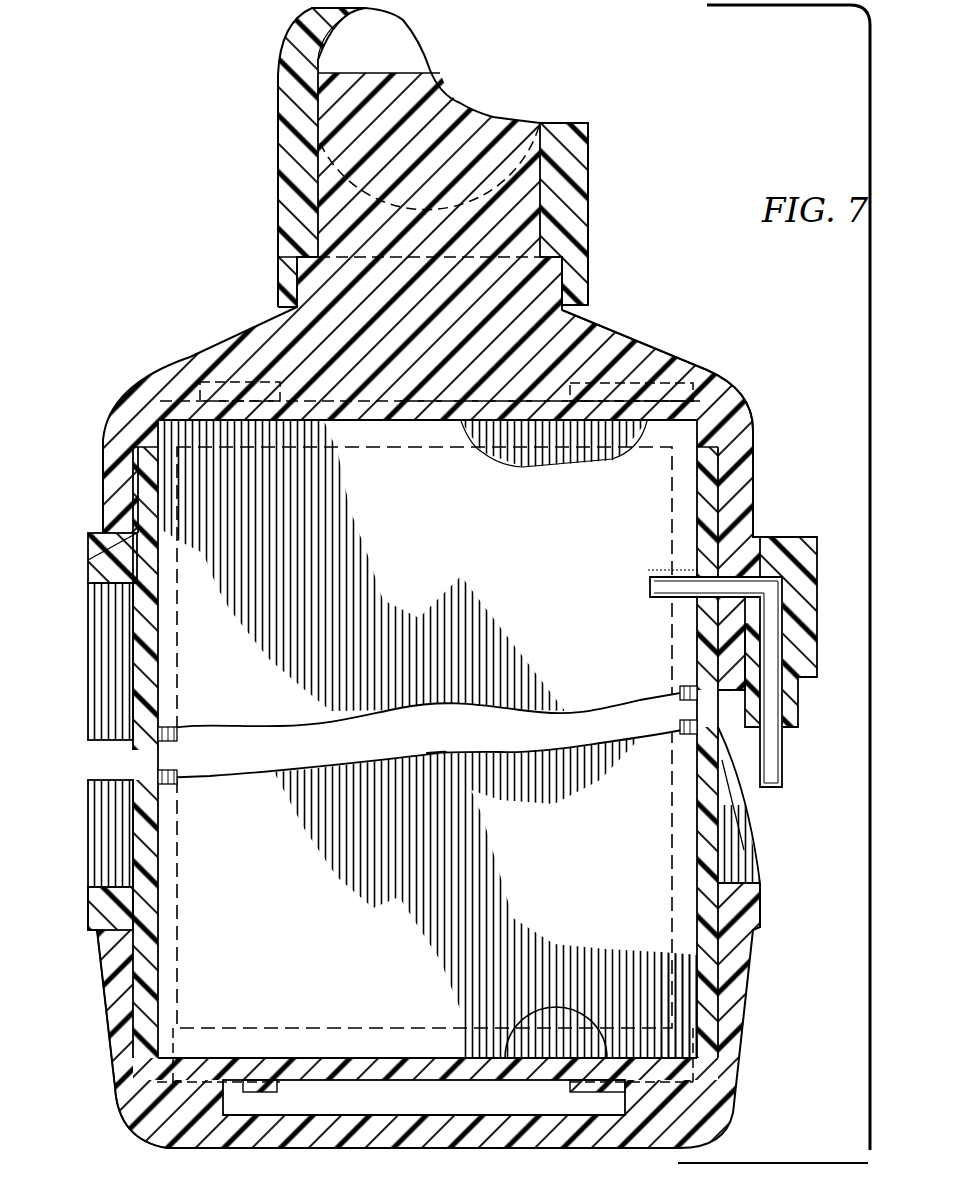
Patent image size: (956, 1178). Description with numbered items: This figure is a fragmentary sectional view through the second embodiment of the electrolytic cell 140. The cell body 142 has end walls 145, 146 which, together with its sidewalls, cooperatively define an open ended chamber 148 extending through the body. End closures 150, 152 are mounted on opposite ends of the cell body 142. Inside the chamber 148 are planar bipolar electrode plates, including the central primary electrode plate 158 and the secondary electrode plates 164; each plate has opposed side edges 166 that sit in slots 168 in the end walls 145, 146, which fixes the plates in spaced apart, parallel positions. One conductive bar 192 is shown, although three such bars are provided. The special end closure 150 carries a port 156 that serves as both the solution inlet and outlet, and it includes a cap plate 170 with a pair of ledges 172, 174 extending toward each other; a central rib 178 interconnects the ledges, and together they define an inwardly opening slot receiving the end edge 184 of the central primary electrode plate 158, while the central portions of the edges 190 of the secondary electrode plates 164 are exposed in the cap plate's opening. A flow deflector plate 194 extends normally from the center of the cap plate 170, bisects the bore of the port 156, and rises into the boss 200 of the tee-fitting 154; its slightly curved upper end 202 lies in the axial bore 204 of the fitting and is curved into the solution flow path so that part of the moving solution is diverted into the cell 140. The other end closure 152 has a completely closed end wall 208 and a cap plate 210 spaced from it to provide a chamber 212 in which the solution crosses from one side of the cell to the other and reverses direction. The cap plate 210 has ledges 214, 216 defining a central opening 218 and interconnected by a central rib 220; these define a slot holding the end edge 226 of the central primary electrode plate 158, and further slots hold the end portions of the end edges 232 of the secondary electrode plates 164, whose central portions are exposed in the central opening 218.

The electrolytic cell 140 is at (70, 880).
The cell body 142 is at (138, 770).
The end wall 145 is at (118, 855).
The end wall 146 is at (720, 826).
The open ended chamber 148 is at (724, 851).
The end closure 150 is at (190, 352).
The end closure 152 is at (750, 1128).
The tee-fitting 154 is at (268, 237).
The port 156 is at (278, 268).
The central primary electrode plate 158 is at (438, 688).
The secondary electrode plates 164 is at (556, 445).
The side edges 166 is at (722, 470).
The slots 168 is at (174, 778).
The cap plate 170 is at (678, 393).
The ledge 172 is at (248, 380).
The ledge 174 is at (612, 383).
The central rib 178 is at (412, 425).
The end edge 184 is at (458, 424).
The edges 190 is at (530, 400).
The conductive bar 192 is at (785, 710).
The flow deflector plate 194 is at (566, 218).
The boss 200 is at (590, 280).
The curved upper end 202 is at (425, 73).
The axial bore 204 is at (396, 44).
The end wall 208 is at (482, 1135).
The cap plate 210 is at (208, 1044).
The chamber 212 is at (466, 1109).
The ledge 214 is at (260, 1092).
The ledge 216 is at (560, 1092).
The central opening 218 is at (408, 1125).
The central rib 220 is at (460, 1052).
The end edge 226 is at (625, 1052).
The end edges 232 is at (125, 1088).